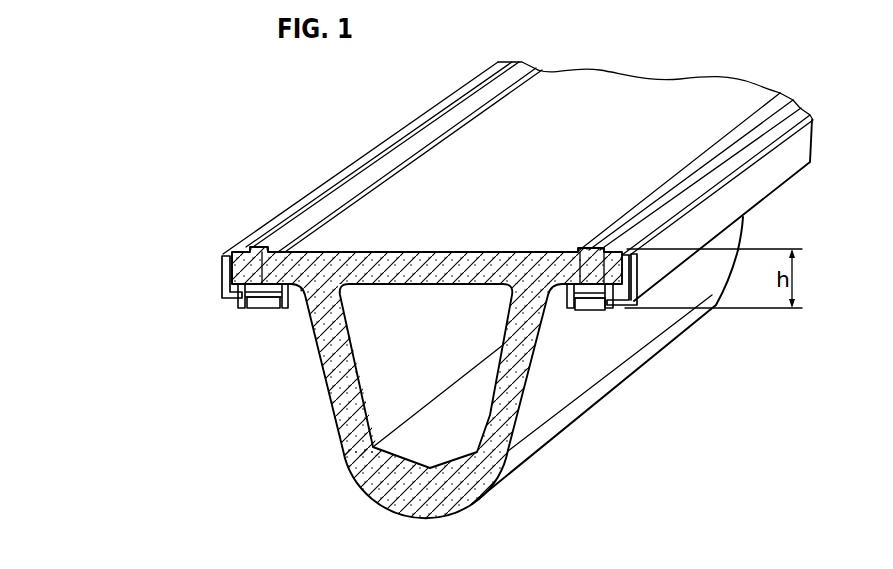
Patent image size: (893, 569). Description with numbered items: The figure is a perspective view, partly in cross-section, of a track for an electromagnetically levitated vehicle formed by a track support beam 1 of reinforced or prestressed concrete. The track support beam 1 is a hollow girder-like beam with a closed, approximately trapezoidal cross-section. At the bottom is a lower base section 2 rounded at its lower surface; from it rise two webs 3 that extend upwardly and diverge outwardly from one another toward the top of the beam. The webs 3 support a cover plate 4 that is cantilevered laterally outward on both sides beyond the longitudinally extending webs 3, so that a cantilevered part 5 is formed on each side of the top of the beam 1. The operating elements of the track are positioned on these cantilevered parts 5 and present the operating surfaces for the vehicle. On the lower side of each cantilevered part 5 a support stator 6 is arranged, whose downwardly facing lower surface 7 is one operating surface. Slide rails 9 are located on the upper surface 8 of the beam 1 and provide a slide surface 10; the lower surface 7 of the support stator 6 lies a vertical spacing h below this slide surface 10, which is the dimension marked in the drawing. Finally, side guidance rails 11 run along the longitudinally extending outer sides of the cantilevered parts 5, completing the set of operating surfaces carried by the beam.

The track support beam 1 is at (330, 417).
The lower base section 2 is at (400, 506).
The webs 3 is at (330, 347).
The cover plate 4 is at (415, 249).
The cantilevered parts 5 is at (236, 253).
The support stator 6 is at (260, 306).
The lower surface of the support stator 7 is at (271, 312).
The upper surface of the beam 8 is at (587, 84).
The slide rails 9 is at (258, 250).
The slide surface 10 is at (298, 226).
The side guidance rails 11 is at (221, 277).